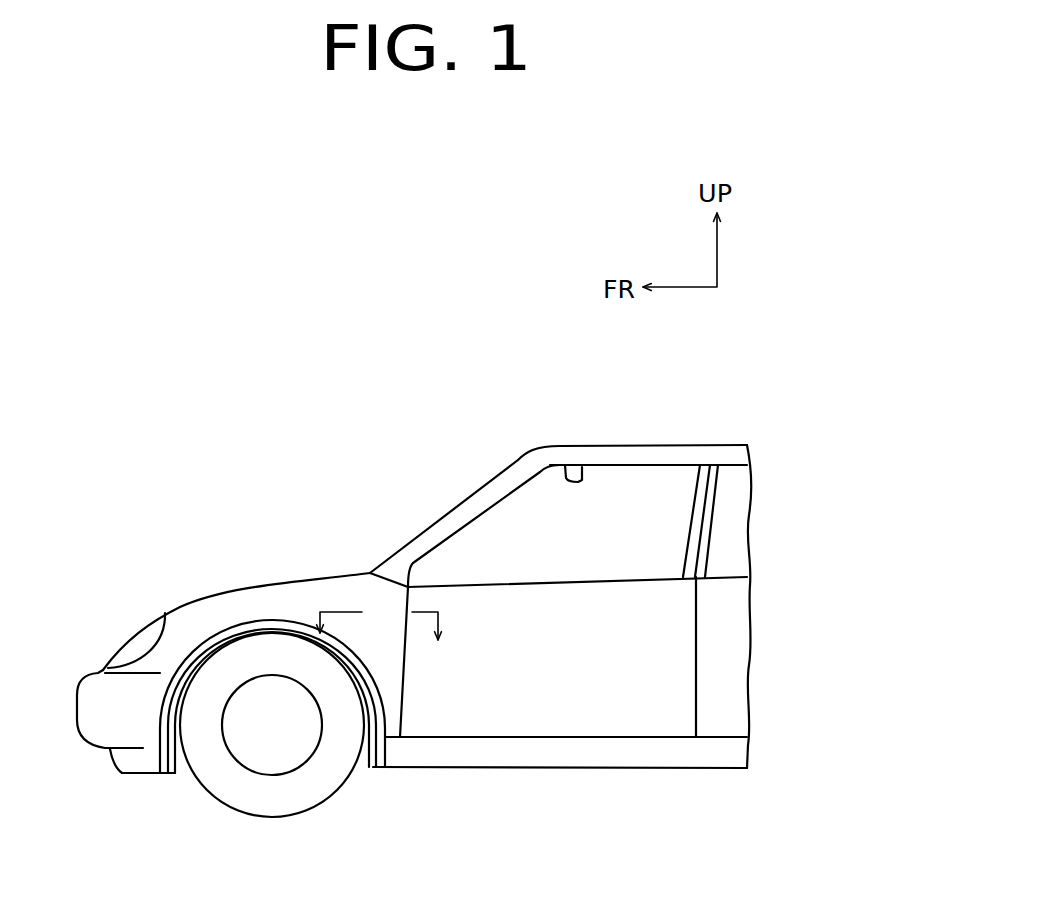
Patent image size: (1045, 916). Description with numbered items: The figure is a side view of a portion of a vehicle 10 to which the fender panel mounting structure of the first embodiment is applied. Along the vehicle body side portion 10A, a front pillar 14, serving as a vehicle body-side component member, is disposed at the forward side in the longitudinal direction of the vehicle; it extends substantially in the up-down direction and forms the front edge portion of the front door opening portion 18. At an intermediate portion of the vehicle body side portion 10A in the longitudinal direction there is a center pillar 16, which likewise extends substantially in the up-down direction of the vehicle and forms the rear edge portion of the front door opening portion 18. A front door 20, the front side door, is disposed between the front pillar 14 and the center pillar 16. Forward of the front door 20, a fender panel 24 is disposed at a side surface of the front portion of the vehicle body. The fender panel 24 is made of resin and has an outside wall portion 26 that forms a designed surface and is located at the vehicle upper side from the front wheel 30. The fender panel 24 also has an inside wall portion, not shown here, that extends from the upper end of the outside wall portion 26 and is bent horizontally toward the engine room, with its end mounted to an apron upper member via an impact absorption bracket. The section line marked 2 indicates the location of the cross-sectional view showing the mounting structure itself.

The vehicle 10 is at (435, 347).
The vehicle body side portion 10A is at (598, 693).
The front pillar 14 is at (455, 502).
The center pillar 16 is at (695, 487).
The front door opening portion 18 is at (565, 465).
The front door 20 is at (540, 708).
The fender panel 24 is at (325, 597).
The outside wall portion 26 is at (240, 607).
The front wheel 30 is at (227, 793).
The section line of FIG. 2 is at (320, 612).